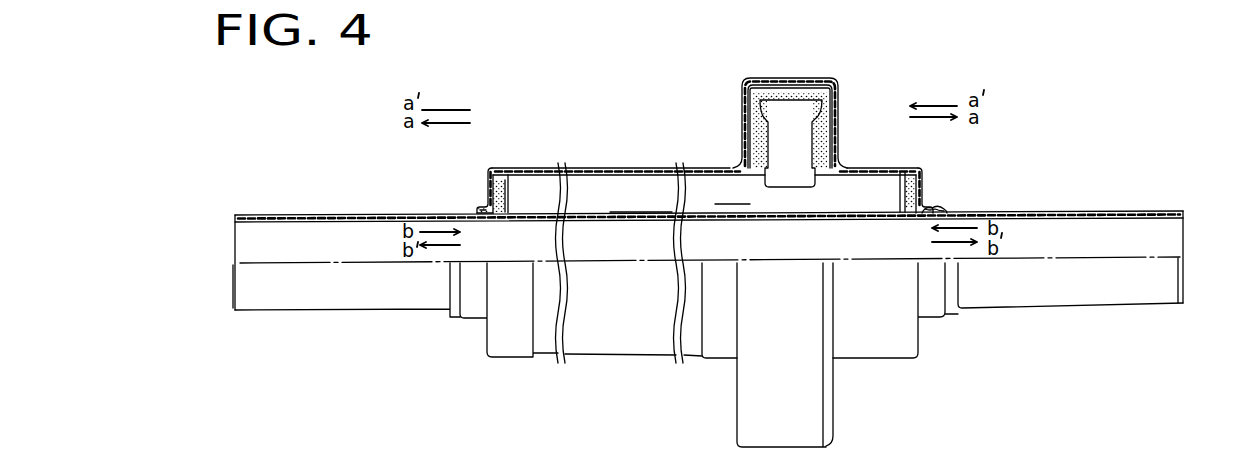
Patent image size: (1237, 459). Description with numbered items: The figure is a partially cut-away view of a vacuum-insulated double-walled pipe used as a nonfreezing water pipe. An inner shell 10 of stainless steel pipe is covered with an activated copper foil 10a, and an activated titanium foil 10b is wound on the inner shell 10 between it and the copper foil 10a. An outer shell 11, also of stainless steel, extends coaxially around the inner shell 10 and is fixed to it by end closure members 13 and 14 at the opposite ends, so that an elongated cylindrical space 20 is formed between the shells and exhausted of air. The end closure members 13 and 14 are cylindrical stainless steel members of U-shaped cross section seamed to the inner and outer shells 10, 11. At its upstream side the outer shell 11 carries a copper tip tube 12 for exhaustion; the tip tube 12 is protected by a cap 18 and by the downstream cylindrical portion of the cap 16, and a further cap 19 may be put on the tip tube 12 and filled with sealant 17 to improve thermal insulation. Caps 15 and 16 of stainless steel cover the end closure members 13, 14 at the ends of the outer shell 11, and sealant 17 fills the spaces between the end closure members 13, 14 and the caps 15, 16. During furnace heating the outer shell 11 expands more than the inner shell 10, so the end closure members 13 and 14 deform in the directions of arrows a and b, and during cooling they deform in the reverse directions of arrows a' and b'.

The inner shell 10 is at (335, 213).
The activated copper foil 10a is at (704, 211).
The activated titanium foil 10b is at (639, 213).
The outer shell 11 is at (592, 168).
The tip tube 12 is at (787, 102).
The end closure member 13 is at (508, 184).
The end closure member 14 is at (887, 180).
The cap 15 is at (488, 200).
The cap 16 is at (923, 203).
The sealant 17 is at (490, 187).
The cap 18 is at (742, 90).
The cap 19 is at (745, 118).
The elongated cylindrical space 20 is at (732, 193).